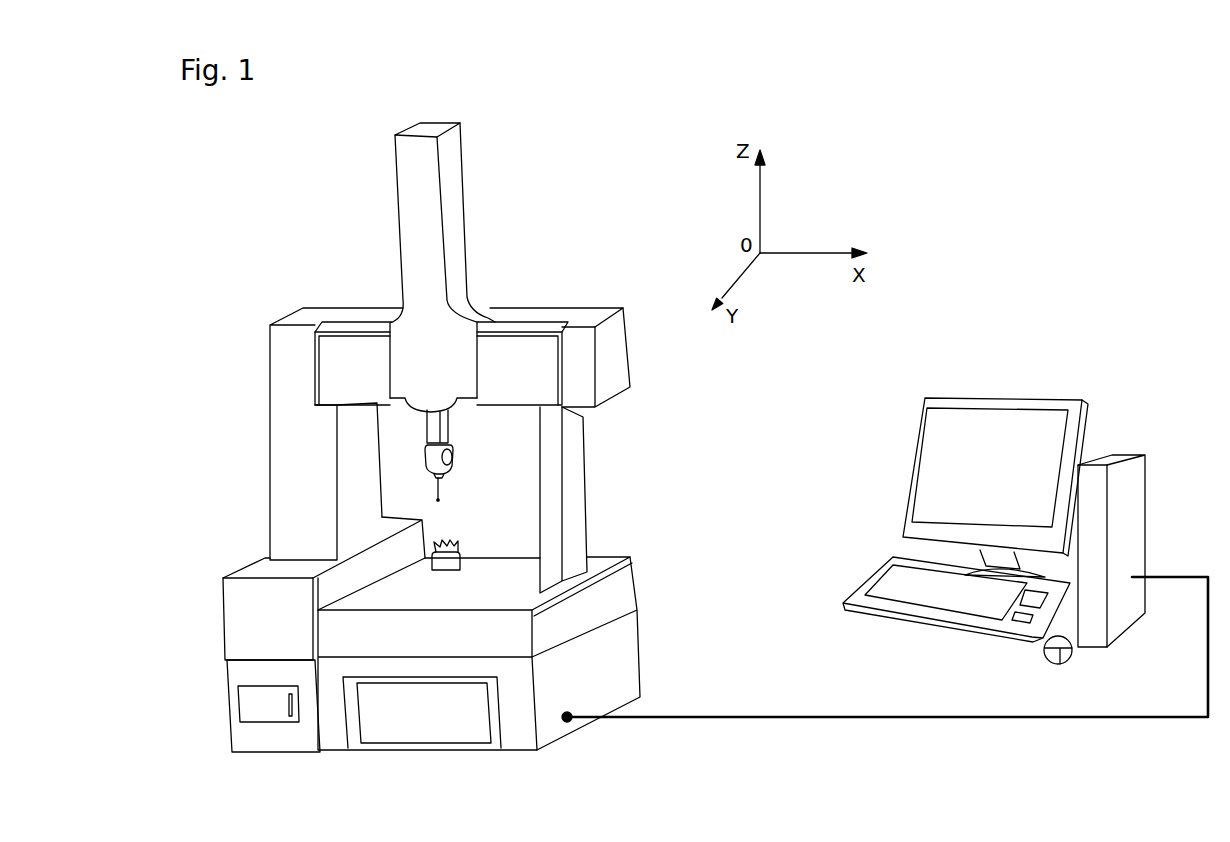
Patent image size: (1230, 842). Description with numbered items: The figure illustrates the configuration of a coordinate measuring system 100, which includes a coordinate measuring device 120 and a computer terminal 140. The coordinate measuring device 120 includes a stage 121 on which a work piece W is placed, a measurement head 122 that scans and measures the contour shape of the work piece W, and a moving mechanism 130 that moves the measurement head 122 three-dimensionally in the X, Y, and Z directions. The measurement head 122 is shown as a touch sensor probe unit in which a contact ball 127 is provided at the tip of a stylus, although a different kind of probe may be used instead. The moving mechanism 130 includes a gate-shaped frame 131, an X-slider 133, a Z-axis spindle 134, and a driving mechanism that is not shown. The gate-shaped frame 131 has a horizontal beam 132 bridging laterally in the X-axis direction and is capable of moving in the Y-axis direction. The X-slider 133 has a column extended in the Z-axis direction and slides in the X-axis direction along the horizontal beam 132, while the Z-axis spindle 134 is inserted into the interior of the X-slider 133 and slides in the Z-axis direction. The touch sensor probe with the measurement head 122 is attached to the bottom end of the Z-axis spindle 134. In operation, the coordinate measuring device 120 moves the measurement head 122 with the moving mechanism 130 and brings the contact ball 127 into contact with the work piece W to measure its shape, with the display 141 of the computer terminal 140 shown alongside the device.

The coordinate measuring system 100 is at (938, 180).
The coordinate measuring device 120 is at (264, 217).
The stage 121 is at (623, 599).
The measurement head 122 is at (462, 452).
The contact ball 127 is at (442, 487).
The moving mechanism 130 is at (232, 358).
The gate-shaped frame 131 is at (282, 500).
The horizontal beam 132 is at (525, 342).
The X-slider 133 is at (407, 247).
The Z-axis spindle 134 is at (430, 423).
The computer terminal 140 is at (1113, 384).
The display 141 is at (943, 390).
The work piece W is at (445, 572).